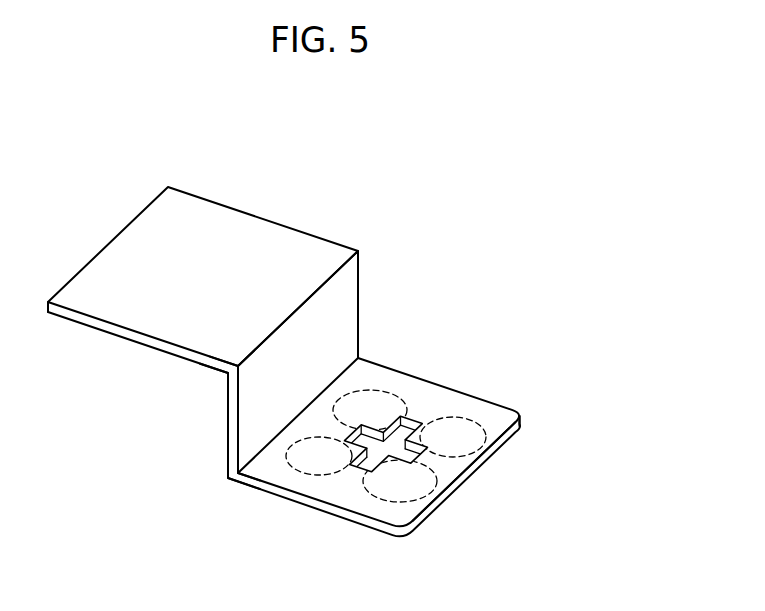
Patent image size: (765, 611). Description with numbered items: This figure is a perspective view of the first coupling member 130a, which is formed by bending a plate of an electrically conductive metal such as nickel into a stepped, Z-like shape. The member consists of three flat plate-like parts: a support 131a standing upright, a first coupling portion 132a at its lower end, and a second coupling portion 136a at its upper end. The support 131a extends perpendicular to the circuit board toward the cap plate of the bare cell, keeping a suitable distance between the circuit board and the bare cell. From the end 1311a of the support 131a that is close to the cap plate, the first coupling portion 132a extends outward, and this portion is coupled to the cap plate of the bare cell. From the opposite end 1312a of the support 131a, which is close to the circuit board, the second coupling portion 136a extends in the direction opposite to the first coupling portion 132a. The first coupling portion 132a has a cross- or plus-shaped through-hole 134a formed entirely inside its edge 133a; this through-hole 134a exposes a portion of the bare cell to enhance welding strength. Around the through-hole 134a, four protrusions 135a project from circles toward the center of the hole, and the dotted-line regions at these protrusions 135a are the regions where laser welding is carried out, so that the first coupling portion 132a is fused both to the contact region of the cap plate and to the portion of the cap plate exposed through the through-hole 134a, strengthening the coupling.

The first coupling member 130a is at (390, 222).
The support 131a is at (340, 322).
The first coupling portion 132a is at (345, 493).
The edge 133a is at (465, 488).
The through-hole 134a is at (412, 440).
The protrusions 135a is at (381, 418).
The second coupling portion 136a is at (247, 228).
The end of the support 1311a is at (228, 477).
The end of the support 1312a is at (228, 373).